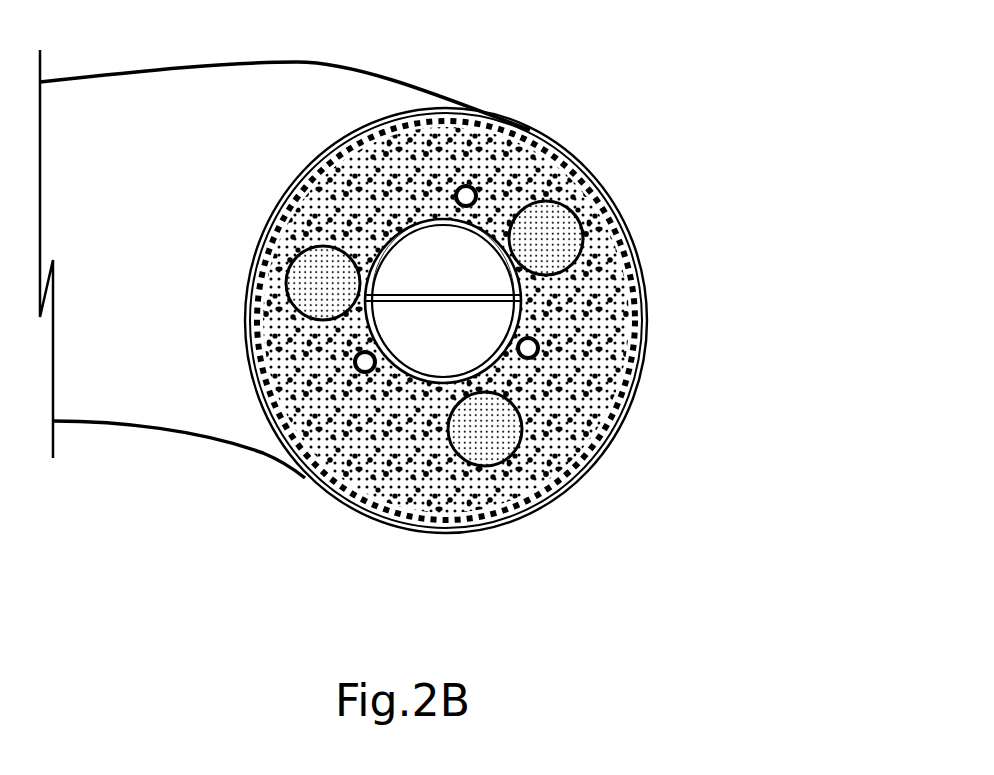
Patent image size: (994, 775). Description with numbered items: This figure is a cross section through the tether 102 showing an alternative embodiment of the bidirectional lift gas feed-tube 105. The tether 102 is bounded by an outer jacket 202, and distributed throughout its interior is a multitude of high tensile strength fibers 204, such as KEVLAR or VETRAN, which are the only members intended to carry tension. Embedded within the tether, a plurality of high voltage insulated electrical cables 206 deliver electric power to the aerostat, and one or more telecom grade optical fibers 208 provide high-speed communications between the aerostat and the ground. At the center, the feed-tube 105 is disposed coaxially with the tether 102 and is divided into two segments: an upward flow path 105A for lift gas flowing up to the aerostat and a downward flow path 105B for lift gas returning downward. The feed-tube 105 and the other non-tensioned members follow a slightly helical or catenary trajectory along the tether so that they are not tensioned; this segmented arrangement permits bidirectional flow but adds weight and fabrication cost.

The tether 102 is at (680, 323).
The feed-tube 105 is at (521, 297).
The upward flow path 105A is at (465, 282).
The downward flow path 105B is at (470, 349).
The jacket 202 is at (632, 410).
The high tensile strength fibers 204 is at (512, 160).
The high voltage insulated electrical cables 206 is at (555, 230).
The telecom grade optical fibers 208 is at (466, 194).